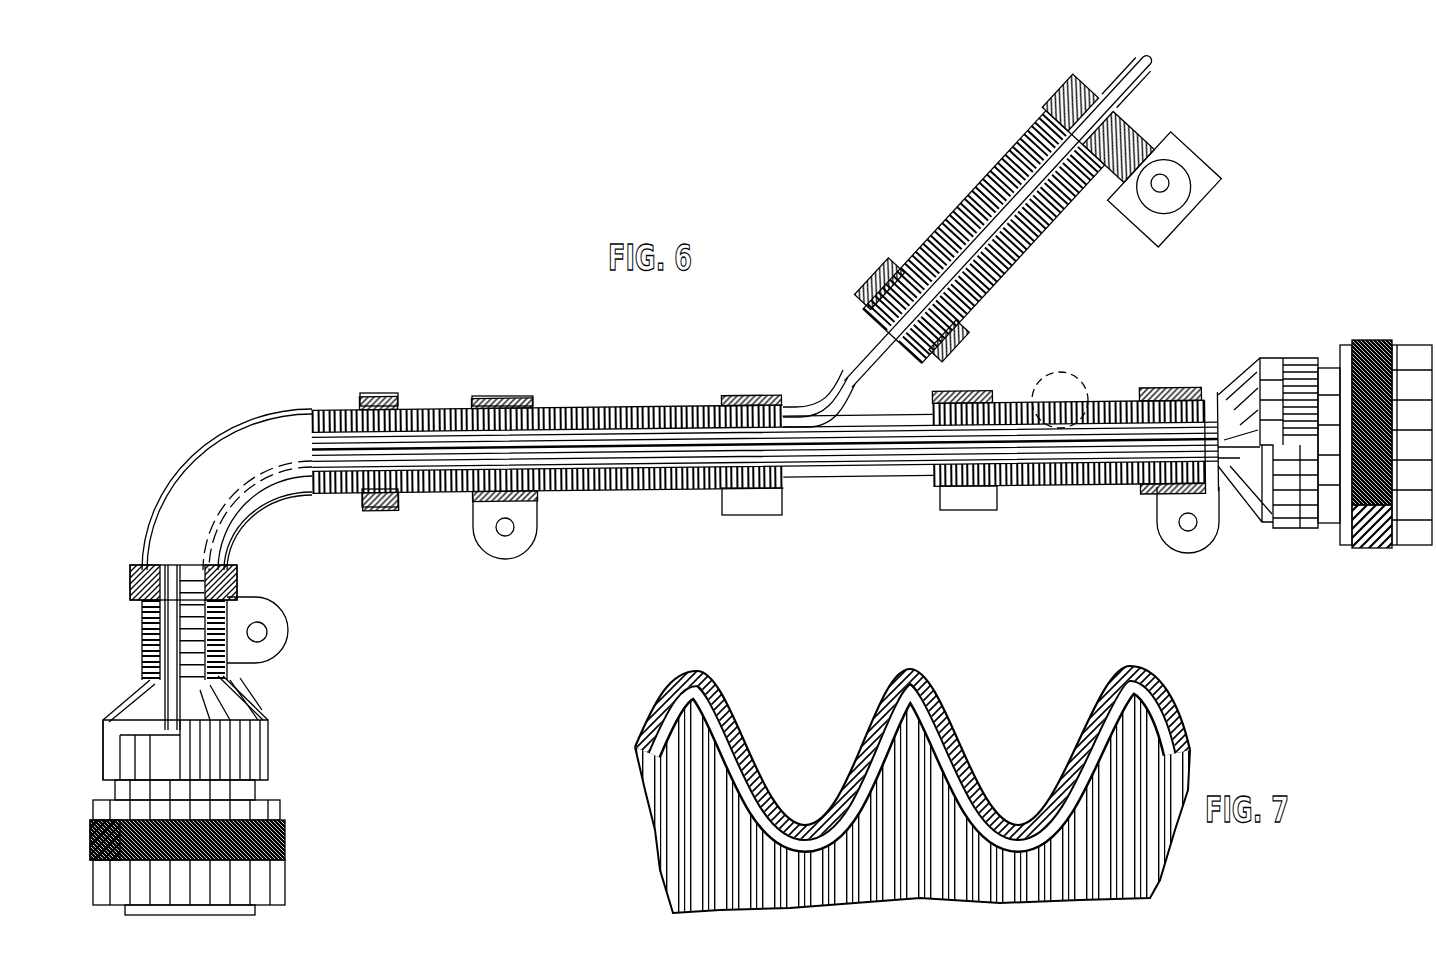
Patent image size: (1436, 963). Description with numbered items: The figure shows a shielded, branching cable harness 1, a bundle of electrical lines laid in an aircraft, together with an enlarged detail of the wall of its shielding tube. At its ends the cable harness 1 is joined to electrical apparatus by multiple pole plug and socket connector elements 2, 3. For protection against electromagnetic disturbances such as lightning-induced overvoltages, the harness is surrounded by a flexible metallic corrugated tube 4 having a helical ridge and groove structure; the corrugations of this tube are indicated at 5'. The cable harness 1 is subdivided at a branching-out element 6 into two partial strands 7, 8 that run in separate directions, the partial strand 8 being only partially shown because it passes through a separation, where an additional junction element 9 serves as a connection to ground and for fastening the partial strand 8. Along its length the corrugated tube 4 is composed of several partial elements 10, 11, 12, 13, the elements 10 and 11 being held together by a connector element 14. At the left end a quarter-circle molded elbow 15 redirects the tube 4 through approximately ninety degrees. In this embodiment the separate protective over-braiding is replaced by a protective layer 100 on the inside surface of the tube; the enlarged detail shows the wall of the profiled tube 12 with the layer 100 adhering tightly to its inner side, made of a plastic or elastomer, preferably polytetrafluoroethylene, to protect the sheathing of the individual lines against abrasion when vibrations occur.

In FIG. 6, the cable harness 1 is at (140, 700).
In FIG. 6, the connector element 2 is at (1344, 345).
In FIG. 6, the connector element 3 is at (288, 805).
In FIG. 6, the corrugated tube 4 is at (1060, 372).
In FIG. 6, the corrugation 5' is at (547, 506).
In FIG. 6, the branching-out element 6 is at (840, 392).
In FIG. 6, the partial strand 7 is at (1246, 510).
In FIG. 6, the partial strand 8 is at (1138, 97).
In FIG. 6, the junction element 9 is at (1060, 107).
In FIG. 6, the partial element 10 is at (438, 405).
In FIG. 6, the partial element 11 is at (634, 405).
In FIG. 6, the profiled tube 12 is at (1090, 490).
In FIG. 7, the profiled tube 12 is at (962, 718).
In FIG. 6, the partial element 13 is at (985, 205).
In FIG. 6, the connector element 14 is at (498, 398).
In FIG. 6, the elbow 15 is at (203, 437).
In FIG. 7, the layer 100 is at (862, 722).